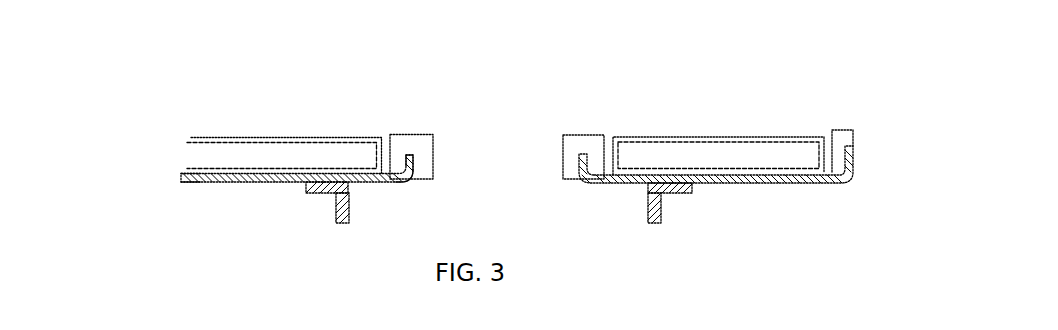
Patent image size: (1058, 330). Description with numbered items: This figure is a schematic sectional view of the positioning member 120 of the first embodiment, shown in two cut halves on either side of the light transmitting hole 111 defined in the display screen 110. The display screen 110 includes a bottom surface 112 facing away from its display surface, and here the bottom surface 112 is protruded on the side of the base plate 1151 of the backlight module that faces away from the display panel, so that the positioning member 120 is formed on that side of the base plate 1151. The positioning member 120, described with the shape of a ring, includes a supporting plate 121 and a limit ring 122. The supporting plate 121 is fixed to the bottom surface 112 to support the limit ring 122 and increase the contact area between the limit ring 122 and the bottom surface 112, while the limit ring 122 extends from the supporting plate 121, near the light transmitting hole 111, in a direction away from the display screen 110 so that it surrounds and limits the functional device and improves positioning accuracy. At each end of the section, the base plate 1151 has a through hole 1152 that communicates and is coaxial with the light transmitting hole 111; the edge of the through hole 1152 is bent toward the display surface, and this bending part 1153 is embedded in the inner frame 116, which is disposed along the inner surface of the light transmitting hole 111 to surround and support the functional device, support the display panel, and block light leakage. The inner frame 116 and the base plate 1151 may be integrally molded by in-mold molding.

The display screen 110 is at (163, 113).
The light transmitting hole 111 is at (507, 132).
The bottom surface 112 is at (230, 185).
The base plate 1151 is at (197, 168).
The through hole 1152 is at (408, 182).
The bending part 1153 is at (415, 160).
The inner frame 116 is at (418, 148).
The positioning member 120 is at (295, 96).
The supporting plate 121 is at (307, 182).
The limit ring 122 is at (335, 170).